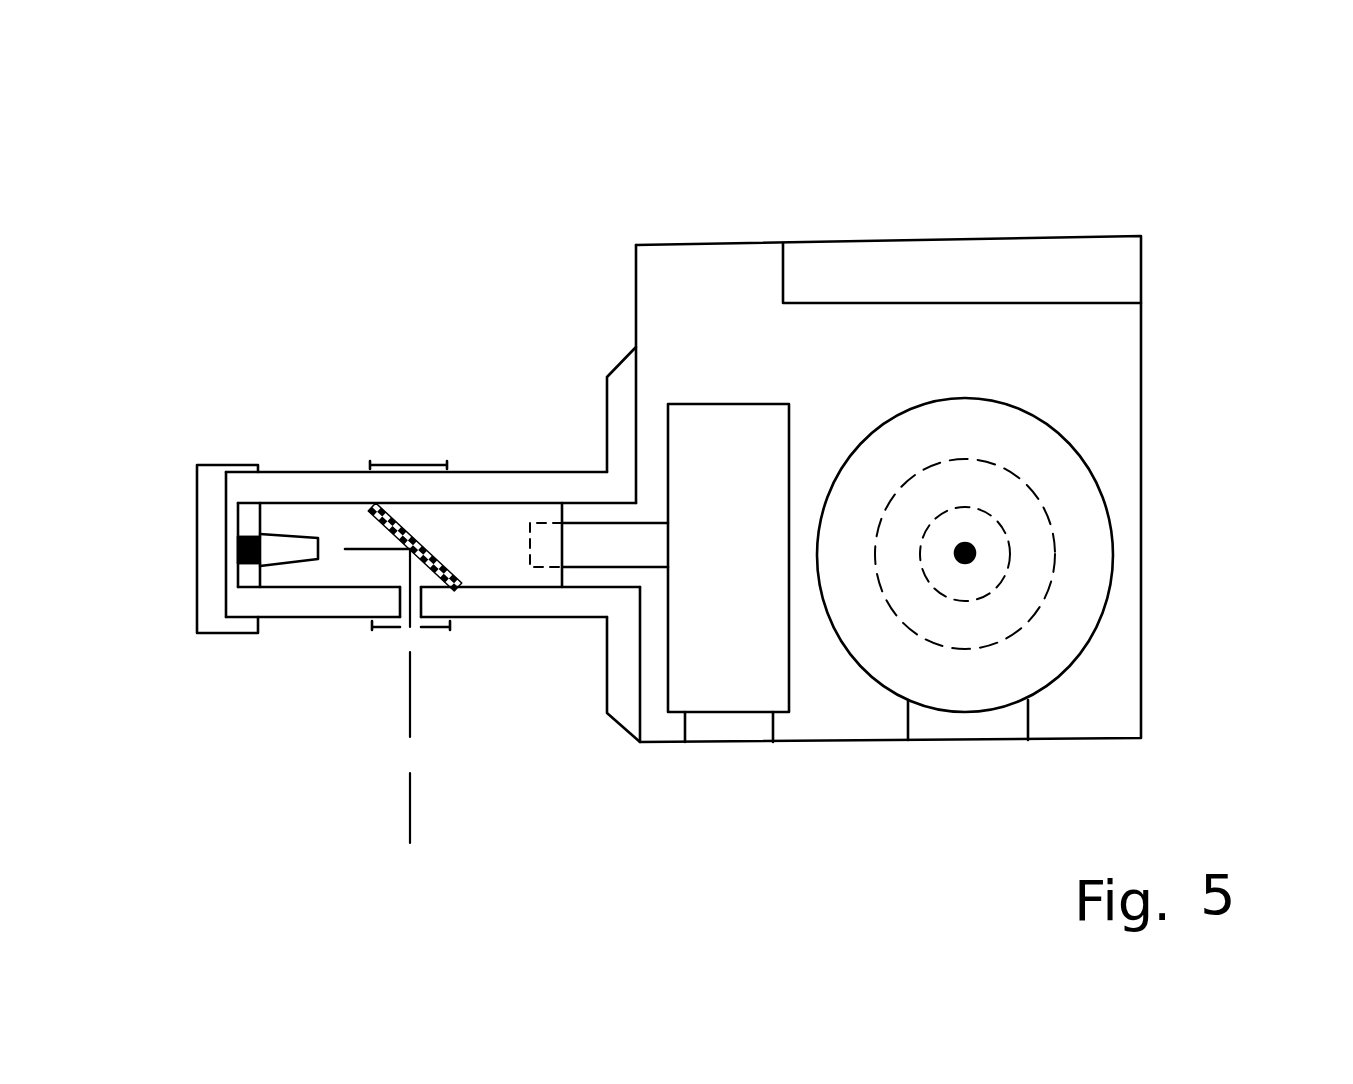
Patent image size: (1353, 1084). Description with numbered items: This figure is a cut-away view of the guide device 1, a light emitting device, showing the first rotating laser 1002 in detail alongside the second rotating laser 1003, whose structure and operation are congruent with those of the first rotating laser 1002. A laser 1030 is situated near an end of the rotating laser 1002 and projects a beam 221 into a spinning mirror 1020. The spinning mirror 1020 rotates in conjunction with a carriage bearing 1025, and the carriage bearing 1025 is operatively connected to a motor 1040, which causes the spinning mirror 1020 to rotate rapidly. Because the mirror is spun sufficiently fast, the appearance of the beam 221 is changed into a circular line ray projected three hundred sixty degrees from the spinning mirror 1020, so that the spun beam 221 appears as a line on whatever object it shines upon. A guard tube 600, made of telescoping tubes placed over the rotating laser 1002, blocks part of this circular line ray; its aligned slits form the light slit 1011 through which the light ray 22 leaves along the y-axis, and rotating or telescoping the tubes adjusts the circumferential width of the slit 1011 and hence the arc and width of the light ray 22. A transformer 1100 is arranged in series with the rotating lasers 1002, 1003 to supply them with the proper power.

The guide device 1 is at (843, 206).
The transformer 1100 is at (1102, 234).
The second rotating laser 1003 is at (1091, 461).
The motor 1040 is at (776, 721).
The first rotating laser 1002 is at (305, 472).
The carriage bearing 1025 is at (473, 503).
The guard tube 600 is at (432, 462).
The laser 1030 is at (280, 528).
The beam 221 is at (342, 551).
The spinning mirror 1020 is at (420, 572).
The light slit 1011 is at (424, 632).
The light ray 22 is at (407, 797).